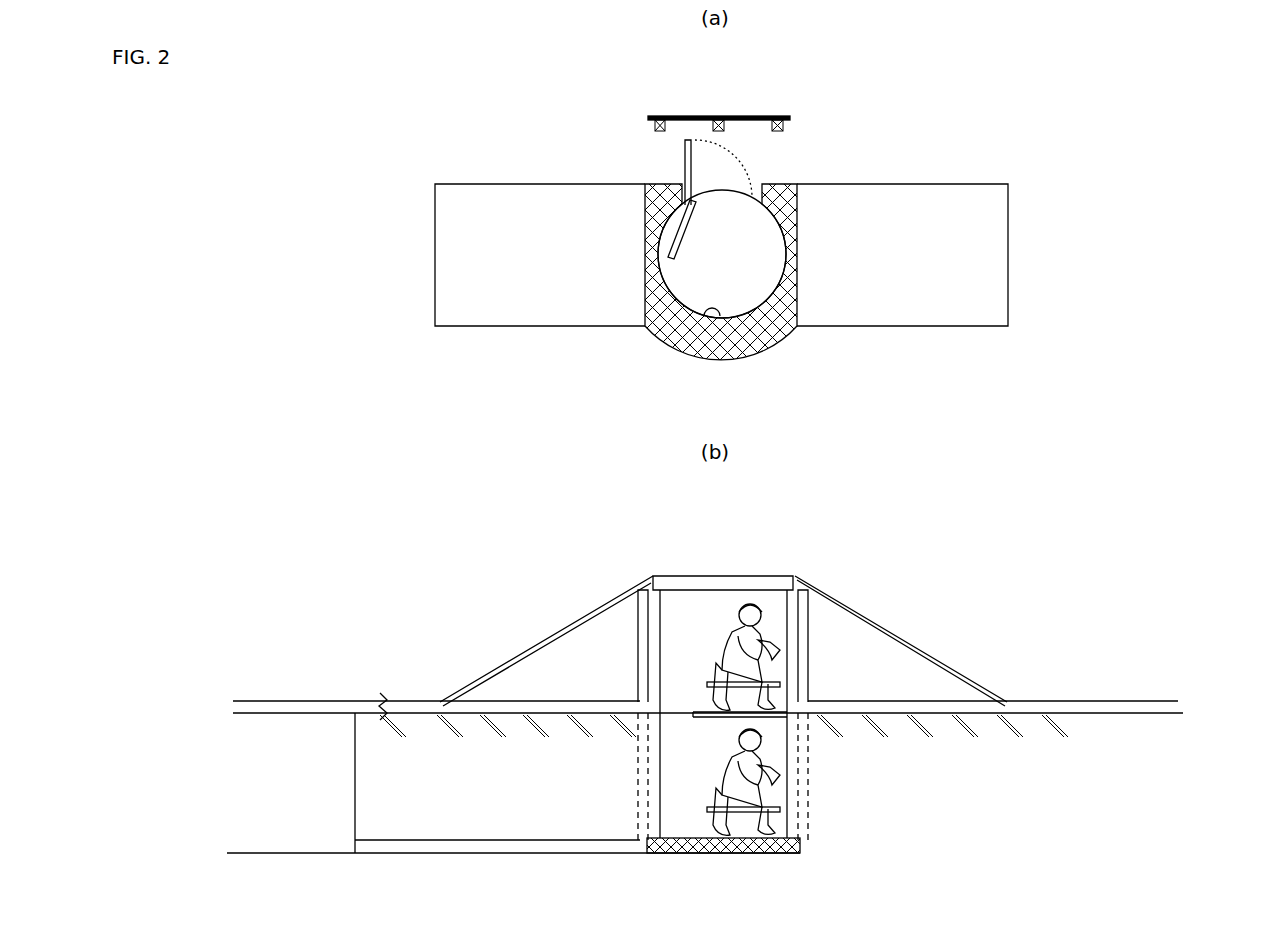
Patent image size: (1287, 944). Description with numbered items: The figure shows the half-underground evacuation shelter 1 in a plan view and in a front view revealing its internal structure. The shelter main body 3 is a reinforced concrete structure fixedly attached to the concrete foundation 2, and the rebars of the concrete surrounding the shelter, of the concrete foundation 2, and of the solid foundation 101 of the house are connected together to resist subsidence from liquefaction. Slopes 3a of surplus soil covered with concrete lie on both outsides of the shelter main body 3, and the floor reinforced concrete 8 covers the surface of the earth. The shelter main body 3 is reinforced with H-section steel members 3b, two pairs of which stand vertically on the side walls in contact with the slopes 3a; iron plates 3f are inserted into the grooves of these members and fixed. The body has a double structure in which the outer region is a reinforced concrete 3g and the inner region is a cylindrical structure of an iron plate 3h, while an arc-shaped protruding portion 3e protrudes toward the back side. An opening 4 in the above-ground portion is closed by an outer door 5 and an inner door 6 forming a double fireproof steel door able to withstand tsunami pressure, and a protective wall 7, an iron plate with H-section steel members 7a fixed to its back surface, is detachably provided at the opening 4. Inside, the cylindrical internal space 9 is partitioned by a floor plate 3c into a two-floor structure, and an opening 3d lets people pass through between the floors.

The half-underground evacuation shelter 1 is at (1001, 96).
The concrete foundation 2 is at (800, 845).
The shelter main body 3 is at (790, 270).
The slope 3a is at (527, 648).
The H-section steel member 3b is at (645, 190).
The floor plate 3c is at (765, 716).
The opening 3d is at (660, 737).
The protruding portion 3e is at (755, 356).
The iron plate 3f is at (645, 226).
The reinforced concrete 3g is at (688, 337).
The iron plate 3h is at (718, 305).
The opening 4 is at (752, 188).
The outer door 5 is at (684, 165).
The inner door 6 is at (679, 228).
The protective wall 7 is at (758, 120).
The H-section steel member 7a is at (655, 124).
The floor reinforced concrete 8 is at (1173, 708).
The internal space 9 is at (697, 277).
The solid foundation 101 is at (280, 727).